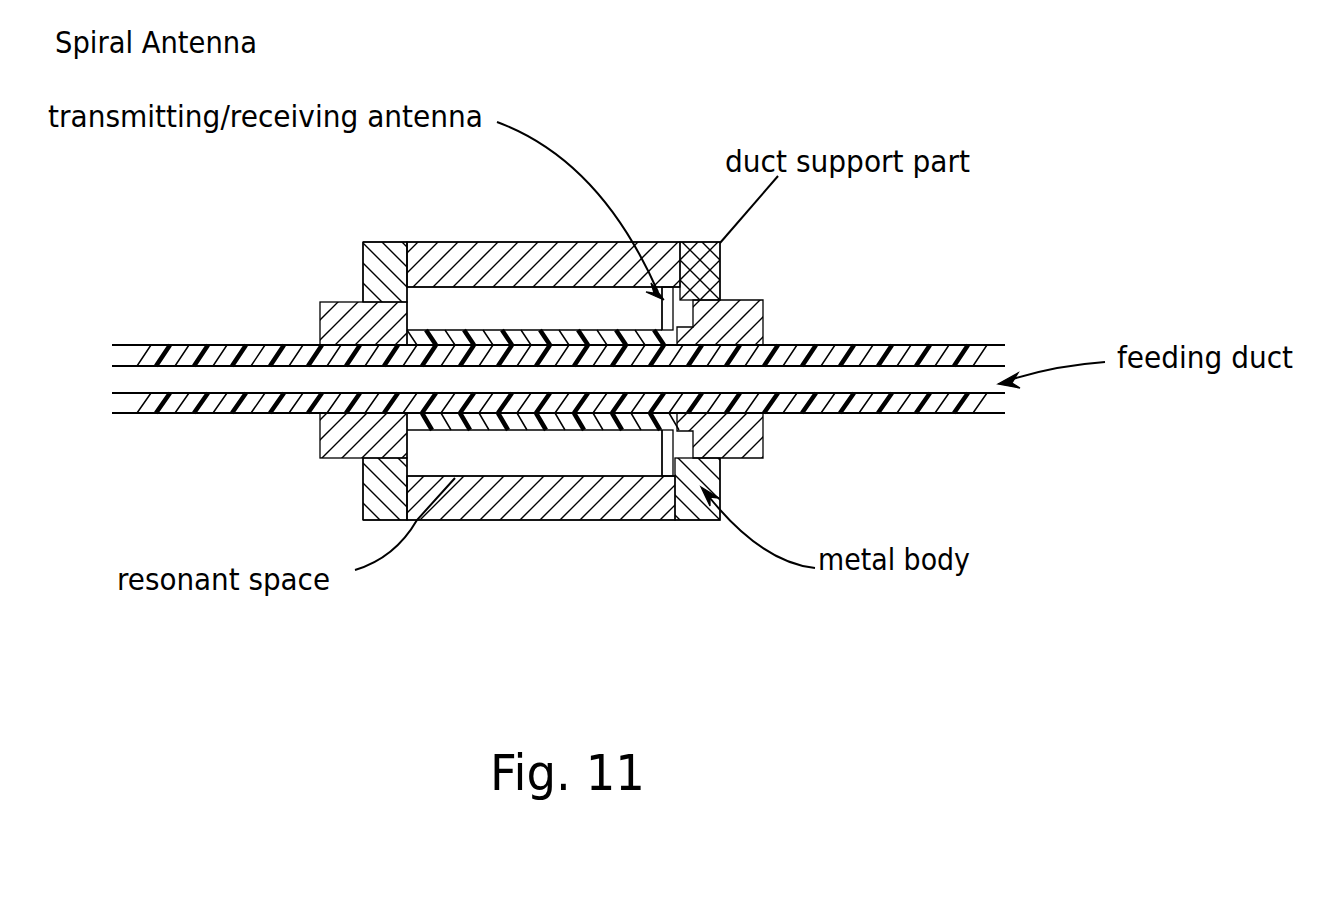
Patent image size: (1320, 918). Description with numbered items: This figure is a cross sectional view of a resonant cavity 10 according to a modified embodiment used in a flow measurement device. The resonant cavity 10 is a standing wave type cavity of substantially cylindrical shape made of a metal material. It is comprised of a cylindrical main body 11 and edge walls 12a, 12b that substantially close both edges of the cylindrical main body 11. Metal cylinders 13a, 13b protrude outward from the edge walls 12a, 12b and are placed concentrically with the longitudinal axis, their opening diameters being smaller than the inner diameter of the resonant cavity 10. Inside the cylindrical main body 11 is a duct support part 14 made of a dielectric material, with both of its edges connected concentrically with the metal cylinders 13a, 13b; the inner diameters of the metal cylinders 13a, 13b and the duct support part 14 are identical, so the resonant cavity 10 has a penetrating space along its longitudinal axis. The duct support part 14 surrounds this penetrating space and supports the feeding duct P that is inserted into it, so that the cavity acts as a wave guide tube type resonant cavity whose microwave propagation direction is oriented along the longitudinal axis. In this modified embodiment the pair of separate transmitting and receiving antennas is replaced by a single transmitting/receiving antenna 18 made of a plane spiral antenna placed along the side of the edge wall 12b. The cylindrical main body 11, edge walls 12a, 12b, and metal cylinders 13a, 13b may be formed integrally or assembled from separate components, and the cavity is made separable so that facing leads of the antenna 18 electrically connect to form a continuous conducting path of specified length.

The resonant cavity 10 is at (433, 588).
The cylindrical main body 11 is at (455, 242).
The edge wall 12a is at (363, 290).
The edge wall 12b is at (720, 285).
The metal cylinder 13a is at (320, 328).
The metal cylinder 13b is at (763, 330).
The duct support part 14 is at (513, 477).
The transmitting/receiving antenna 18 is at (689, 327).
The feeding duct P is at (953, 414).